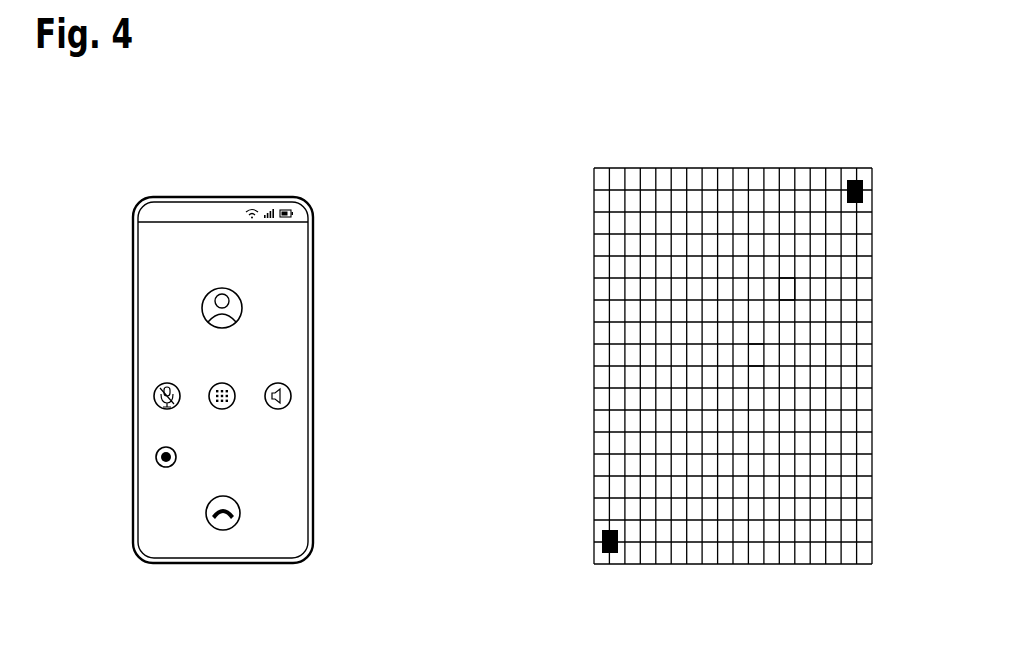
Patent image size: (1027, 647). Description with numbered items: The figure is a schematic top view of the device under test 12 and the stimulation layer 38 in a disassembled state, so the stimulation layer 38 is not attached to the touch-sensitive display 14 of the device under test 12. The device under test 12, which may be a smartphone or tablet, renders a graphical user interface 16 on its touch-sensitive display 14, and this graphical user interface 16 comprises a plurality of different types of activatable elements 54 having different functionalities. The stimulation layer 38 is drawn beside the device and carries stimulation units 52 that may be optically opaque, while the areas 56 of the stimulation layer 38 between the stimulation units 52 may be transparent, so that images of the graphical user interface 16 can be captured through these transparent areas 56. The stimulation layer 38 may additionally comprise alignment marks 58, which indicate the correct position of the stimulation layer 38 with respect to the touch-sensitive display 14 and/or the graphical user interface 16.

The device under test 12 is at (207, 329).
The touch-sensitive display 14 is at (207, 369).
The graphical user interface 16 is at (225, 369).
The stimulation layer 38 is at (720, 322).
The stimulation units 52 is at (623, 312).
The activatable elements 54 is at (154, 396).
The transparent areas 56 is at (771, 356).
The alignment marks 58 is at (853, 181).